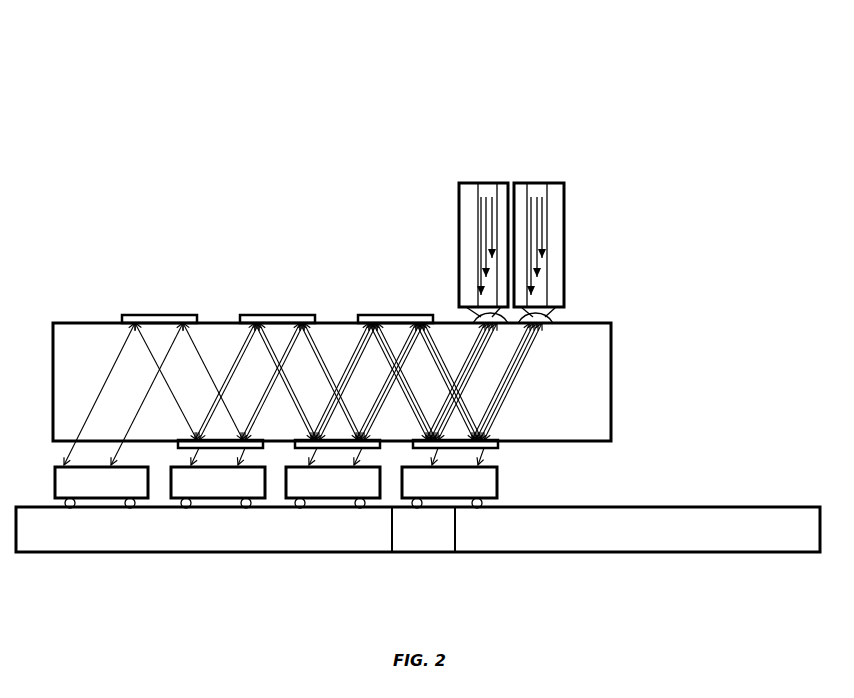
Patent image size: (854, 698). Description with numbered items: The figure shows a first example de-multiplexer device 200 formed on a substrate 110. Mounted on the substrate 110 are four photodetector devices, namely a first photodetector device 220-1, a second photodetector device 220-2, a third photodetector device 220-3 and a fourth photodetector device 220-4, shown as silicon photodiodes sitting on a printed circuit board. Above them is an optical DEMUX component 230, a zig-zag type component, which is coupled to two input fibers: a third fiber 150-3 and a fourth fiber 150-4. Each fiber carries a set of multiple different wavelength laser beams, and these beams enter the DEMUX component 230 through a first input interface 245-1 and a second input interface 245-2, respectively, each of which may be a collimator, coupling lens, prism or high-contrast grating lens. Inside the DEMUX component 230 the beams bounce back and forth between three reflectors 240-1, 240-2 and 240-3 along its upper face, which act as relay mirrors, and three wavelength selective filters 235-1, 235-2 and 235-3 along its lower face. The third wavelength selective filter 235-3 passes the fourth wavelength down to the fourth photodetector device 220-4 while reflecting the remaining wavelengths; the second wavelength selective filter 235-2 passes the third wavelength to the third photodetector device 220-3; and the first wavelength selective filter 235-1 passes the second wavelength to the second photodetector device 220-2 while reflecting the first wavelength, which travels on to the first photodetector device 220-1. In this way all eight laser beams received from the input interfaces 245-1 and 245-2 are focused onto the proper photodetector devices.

The de-multiplexer (DE-MUX) device 200 is at (92, 110).
The substrate 110 is at (418, 529).
The optical DEMUX component 230 is at (332, 382).
The third fiber 150-3 is at (458, 183).
The fourth fiber 150-4 is at (538, 183).
The first input interface 245-1 is at (462, 307).
The second input interface 245-2 is at (560, 307).
The reflector 240-1 is at (143, 315).
The reflector 240-2 is at (262, 315).
The reflector 240-3 is at (378, 315).
The first wavelength selective filter 235-1 is at (183, 447).
The second wavelength selective filter 235-2 is at (368, 447).
The third wavelength selective filter 235-3 is at (494, 447).
The first photodetector device 220-1 is at (101, 499).
The second photodetector device 220-2 is at (215, 499).
The third photodetector device 220-3 is at (323, 498).
The fourth photodetector device 220-4 is at (462, 498).